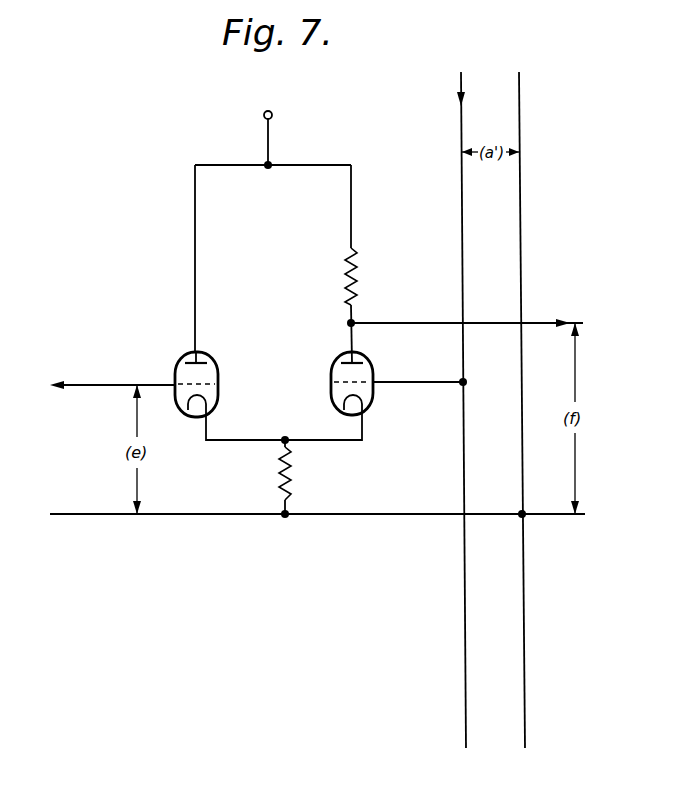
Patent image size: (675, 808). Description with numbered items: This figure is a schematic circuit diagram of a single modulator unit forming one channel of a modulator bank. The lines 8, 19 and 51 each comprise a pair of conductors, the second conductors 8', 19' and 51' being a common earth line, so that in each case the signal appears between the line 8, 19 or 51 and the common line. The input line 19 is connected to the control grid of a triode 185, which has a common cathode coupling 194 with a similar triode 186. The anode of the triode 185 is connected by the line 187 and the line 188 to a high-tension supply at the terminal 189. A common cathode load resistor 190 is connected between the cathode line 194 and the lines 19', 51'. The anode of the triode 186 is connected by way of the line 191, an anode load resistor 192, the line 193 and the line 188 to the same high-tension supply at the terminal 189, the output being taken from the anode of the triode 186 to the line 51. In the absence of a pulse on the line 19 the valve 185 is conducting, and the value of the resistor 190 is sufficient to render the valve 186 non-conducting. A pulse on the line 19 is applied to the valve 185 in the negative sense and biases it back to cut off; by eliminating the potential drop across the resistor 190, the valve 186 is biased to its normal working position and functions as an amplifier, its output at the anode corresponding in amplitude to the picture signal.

The line 8 is at (448, 410).
The conductor 8' is at (535, 410).
The line 19 is at (112, 399).
The line 19' is at (317, 538).
The line 51 is at (467, 338).
The line 51' is at (556, 539).
The triode 185 is at (218, 378).
The triode 186 is at (374, 392).
The line 187 is at (195, 270).
The line 188 is at (272, 160).
The terminal 189 is at (264, 118).
The common cathode load resistor 190 is at (281, 463).
The line 191 is at (355, 333).
The anode load resistor 192 is at (346, 266).
The line 193 is at (353, 210).
The common cathode coupling 194 is at (338, 444).